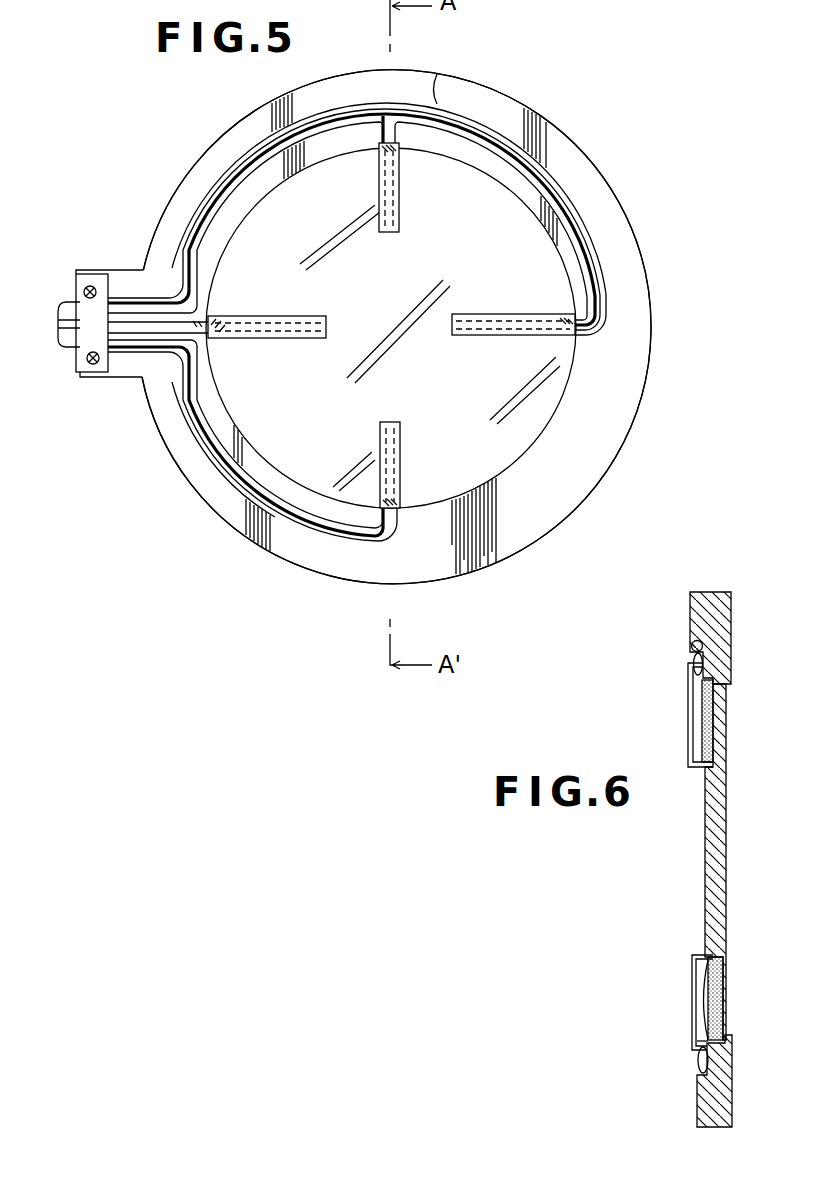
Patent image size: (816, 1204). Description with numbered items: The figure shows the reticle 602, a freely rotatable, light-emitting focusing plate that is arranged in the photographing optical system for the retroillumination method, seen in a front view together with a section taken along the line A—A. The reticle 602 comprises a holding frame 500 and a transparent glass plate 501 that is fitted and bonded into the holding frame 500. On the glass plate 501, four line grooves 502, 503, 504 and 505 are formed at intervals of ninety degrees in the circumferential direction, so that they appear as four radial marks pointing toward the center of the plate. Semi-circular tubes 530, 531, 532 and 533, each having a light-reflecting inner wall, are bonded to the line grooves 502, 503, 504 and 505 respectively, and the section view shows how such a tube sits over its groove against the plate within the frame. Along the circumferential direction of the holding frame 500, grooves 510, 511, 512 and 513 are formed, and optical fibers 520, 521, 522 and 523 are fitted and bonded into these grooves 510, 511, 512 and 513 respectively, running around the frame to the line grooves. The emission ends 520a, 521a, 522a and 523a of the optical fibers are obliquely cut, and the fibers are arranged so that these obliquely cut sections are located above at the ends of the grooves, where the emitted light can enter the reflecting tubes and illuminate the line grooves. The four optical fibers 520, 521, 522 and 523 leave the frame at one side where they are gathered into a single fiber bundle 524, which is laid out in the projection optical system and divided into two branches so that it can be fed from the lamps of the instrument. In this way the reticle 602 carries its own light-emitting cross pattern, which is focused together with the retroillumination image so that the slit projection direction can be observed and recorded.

In FIG. 5, the holding frame 500 is at (558, 496).
In FIG. 6, the holding frame 500 is at (697, 604).
In FIG. 5, the transparent glass plate 501 is at (548, 290).
In FIG. 6, the transparent glass plate 501 is at (714, 846).
In FIG. 5, the line groove 502 is at (402, 200).
In FIG. 6, the line groove 502 is at (706, 720).
In FIG. 5, the line groove 503 is at (497, 335).
In FIG. 5, the line groove 504 is at (394, 458).
In FIG. 6, the line groove 504 is at (710, 978).
In FIG. 5, the line groove 505 is at (308, 316).
In FIG. 5, the groove 510 is at (388, 540).
In FIG. 5, the groove 511 is at (208, 345).
In FIG. 5, the groove 512 is at (275, 187).
In FIG. 5, the groove 513 is at (437, 72).
In FIG. 5, the optical fiber 520 is at (210, 316).
In FIG. 5, the emission end 520a is at (230, 316).
In FIG. 5, the optical fiber 521 is at (310, 512).
In FIG. 6, the optical fiber 521 is at (698, 1062).
In FIG. 5, the emission end 521a is at (400, 497).
In FIG. 6, the emission end 521a is at (697, 1042).
In FIG. 5, the optical fiber 522 is at (238, 180).
In FIG. 6, the optical fiber 522 is at (692, 648).
In FIG. 5, the emission end 522a is at (400, 152).
In FIG. 6, the emission end 522a is at (692, 677).
In FIG. 5, the optical fiber 523 is at (500, 142).
In FIG. 5, the emission end 523a is at (566, 342).
In FIG. 5, the fiber bundle 524 is at (70, 300).
In FIG. 5, the semi-circular tube 530 is at (400, 230).
In FIG. 6, the semi-circular tube 530 is at (688, 704).
In FIG. 5, the semi-circular tube 531 is at (497, 314).
In FIG. 5, the semi-circular tube 532 is at (381, 428).
In FIG. 6, the semi-circular tube 532 is at (693, 972).
In FIG. 5, the semi-circular tube 533 is at (300, 338).
In FIG. 5, the reticle 602 is at (616, 124).